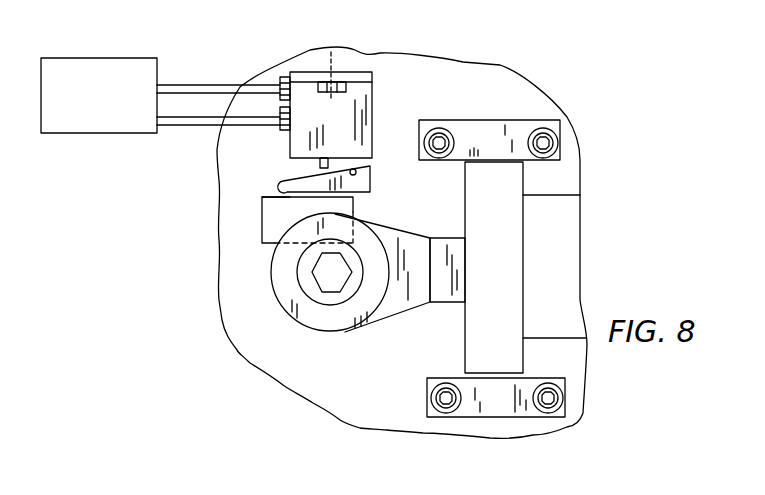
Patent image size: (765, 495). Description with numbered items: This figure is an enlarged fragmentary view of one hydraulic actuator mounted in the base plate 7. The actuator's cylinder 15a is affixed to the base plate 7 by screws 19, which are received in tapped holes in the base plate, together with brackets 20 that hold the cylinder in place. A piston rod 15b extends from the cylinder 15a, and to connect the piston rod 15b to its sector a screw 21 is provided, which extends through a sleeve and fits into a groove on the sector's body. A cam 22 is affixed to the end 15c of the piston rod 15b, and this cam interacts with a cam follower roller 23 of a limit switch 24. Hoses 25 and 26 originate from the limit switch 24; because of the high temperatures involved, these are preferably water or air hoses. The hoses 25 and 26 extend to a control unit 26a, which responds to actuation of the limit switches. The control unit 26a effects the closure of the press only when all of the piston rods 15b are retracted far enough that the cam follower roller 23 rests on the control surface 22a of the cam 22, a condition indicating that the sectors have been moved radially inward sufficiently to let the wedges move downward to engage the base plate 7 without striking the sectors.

The base plate 7 is at (550, 180).
The cylinder 15a is at (555, 243).
The piston rod 15b is at (438, 285).
The end of the piston rod 15c is at (283, 262).
The screws 19 is at (447, 137).
The brackets 20 is at (510, 147).
The screw 21 is at (325, 282).
The cam 22 is at (275, 218).
The control surface 22a is at (272, 197).
The cam follower roller 23 is at (277, 183).
The limit switch 24 is at (310, 102).
The hose 25 is at (290, 85).
The hose 26 is at (263, 118).
The control unit 26a is at (99, 95).